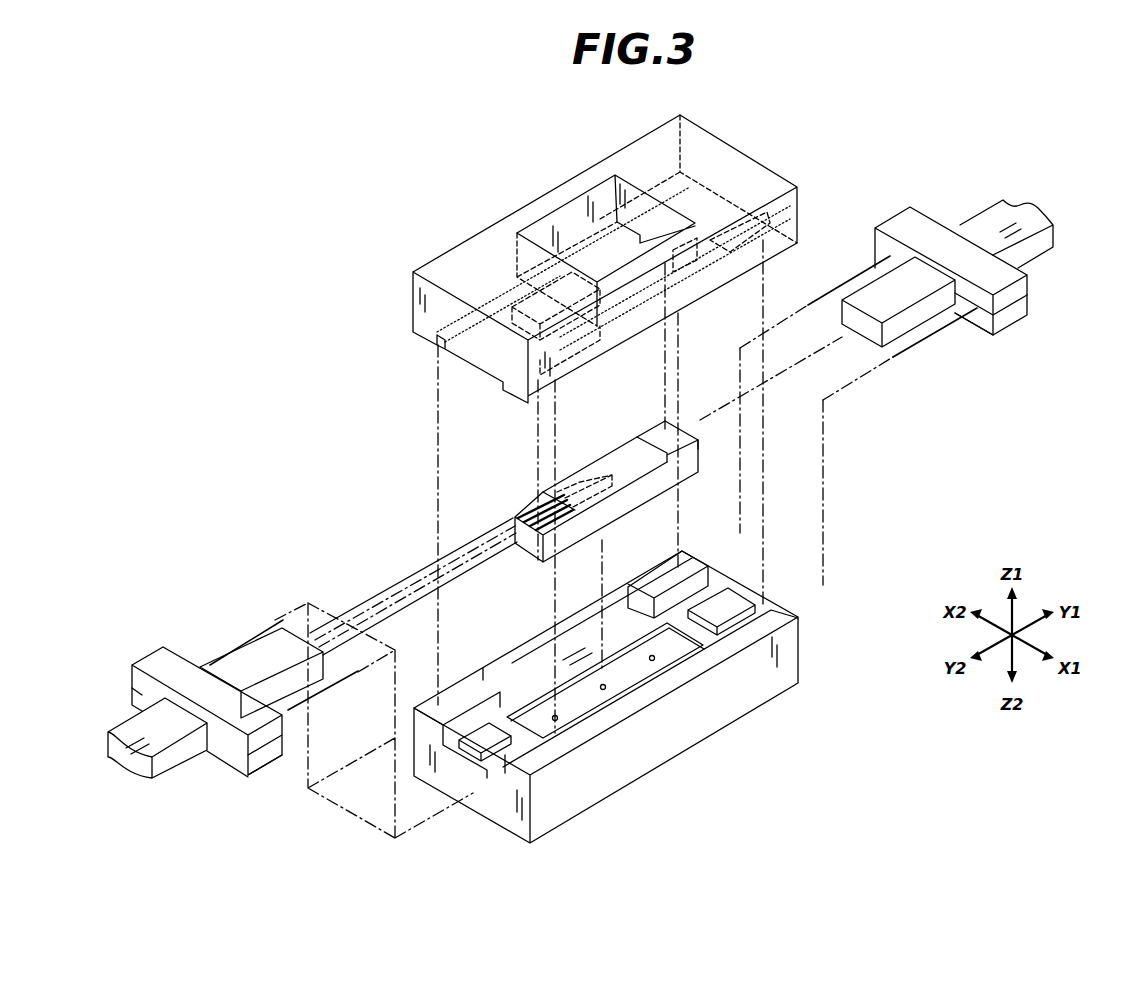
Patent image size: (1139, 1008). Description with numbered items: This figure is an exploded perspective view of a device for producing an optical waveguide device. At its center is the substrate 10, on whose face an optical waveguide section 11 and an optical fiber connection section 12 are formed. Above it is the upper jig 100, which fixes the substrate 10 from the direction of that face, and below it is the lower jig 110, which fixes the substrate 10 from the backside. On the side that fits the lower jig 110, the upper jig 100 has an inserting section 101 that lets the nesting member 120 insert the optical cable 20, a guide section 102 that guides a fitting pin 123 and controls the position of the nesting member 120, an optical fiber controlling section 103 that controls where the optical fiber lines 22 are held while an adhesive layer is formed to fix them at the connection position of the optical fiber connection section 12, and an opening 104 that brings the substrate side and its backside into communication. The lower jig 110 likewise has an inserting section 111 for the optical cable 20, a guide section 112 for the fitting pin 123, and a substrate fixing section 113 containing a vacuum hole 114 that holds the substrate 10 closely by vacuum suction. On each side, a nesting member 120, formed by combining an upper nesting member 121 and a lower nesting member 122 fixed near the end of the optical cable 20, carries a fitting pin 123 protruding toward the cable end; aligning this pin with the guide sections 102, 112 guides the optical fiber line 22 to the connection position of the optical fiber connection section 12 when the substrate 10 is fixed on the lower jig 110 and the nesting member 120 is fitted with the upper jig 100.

The upper jig 100 is at (647, 152).
The inserting section 101 is at (740, 197).
The guide section 102 is at (683, 183).
The optical fiber controlling section 103 is at (538, 307).
The opening 104 is at (565, 227).
The substrate 10 is at (588, 533).
The optical waveguide section 11 is at (610, 465).
The optical fiber connection section 12 is at (662, 433).
The lower jig 110 is at (800, 688).
The inserting section 111 is at (723, 600).
The guide section 112 is at (663, 580).
The substrate fixing section 113 is at (680, 657).
The vacuum hole 114 is at (655, 663).
The nesting member 120 is at (908, 190).
The upper nesting member 121 is at (1028, 290).
The lower nesting member 122 is at (1030, 313).
The fitting pin 123 is at (847, 288).
The optical cable 20 is at (998, 212).
The optical fiber line 22 is at (860, 323).